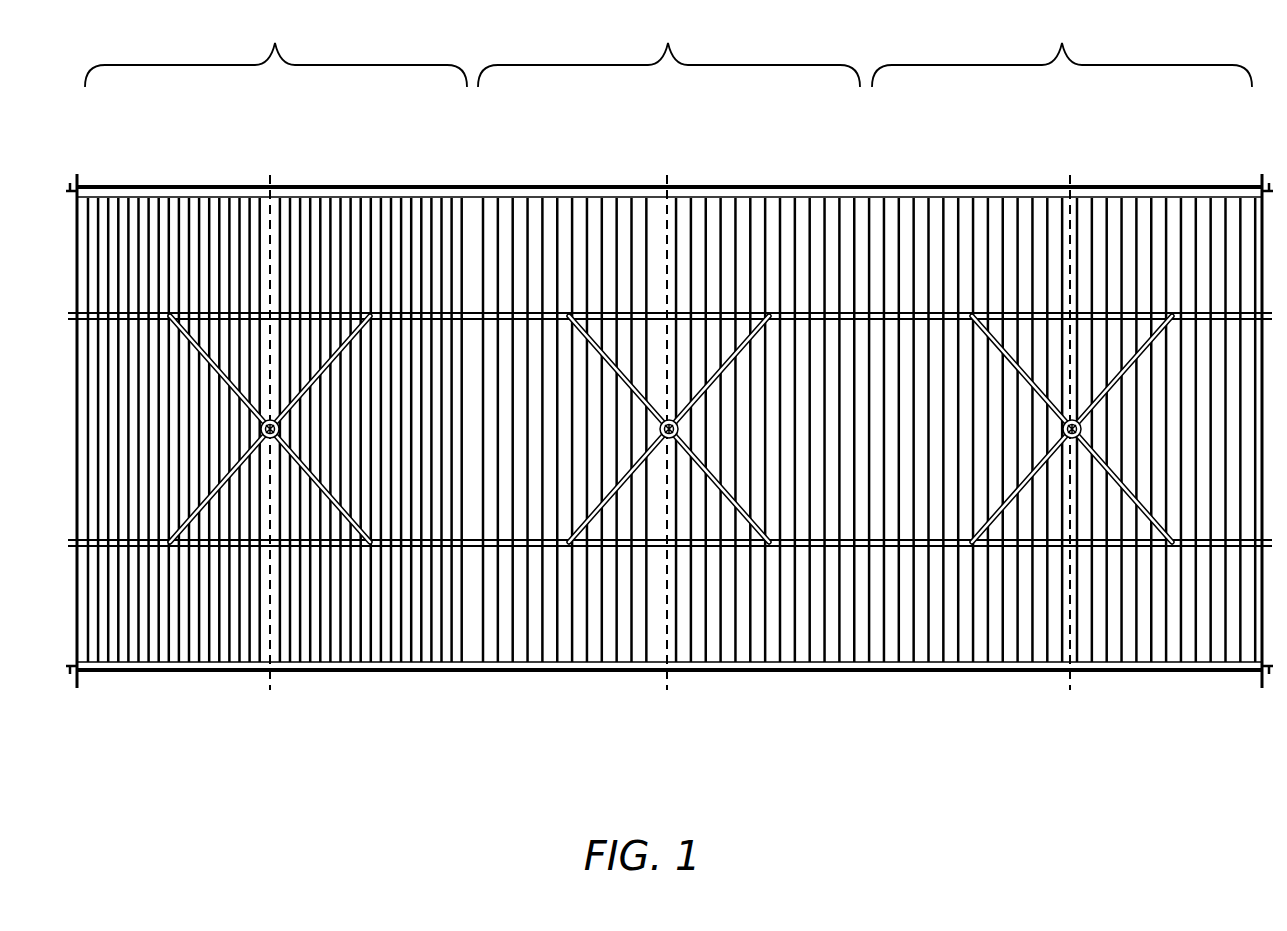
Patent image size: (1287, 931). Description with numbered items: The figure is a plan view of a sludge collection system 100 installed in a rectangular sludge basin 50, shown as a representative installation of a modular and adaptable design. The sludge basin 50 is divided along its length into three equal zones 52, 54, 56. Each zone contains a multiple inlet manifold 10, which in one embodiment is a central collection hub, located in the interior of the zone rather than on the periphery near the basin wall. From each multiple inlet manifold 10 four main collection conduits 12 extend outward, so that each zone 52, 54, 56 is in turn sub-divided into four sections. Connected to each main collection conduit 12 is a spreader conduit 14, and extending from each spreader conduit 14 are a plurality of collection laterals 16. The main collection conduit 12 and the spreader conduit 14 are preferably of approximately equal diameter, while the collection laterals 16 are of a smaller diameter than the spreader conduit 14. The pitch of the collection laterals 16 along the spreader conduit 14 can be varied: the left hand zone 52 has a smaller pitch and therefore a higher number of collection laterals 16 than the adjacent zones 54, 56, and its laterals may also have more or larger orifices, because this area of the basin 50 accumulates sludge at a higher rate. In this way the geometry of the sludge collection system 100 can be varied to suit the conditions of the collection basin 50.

The multiple inlet manifold 10 is at (213, 545).
The main collection conduit 12 is at (237, 337).
The spreader conduit 14 is at (412, 320).
The collection lateral 16 is at (353, 228).
The sludge basin 50 is at (195, 186).
The left hand zone 52 is at (276, 51).
The zone 54 is at (669, 51).
The zone 56 is at (1062, 51).
The sludge collection system 100 is at (503, 385).